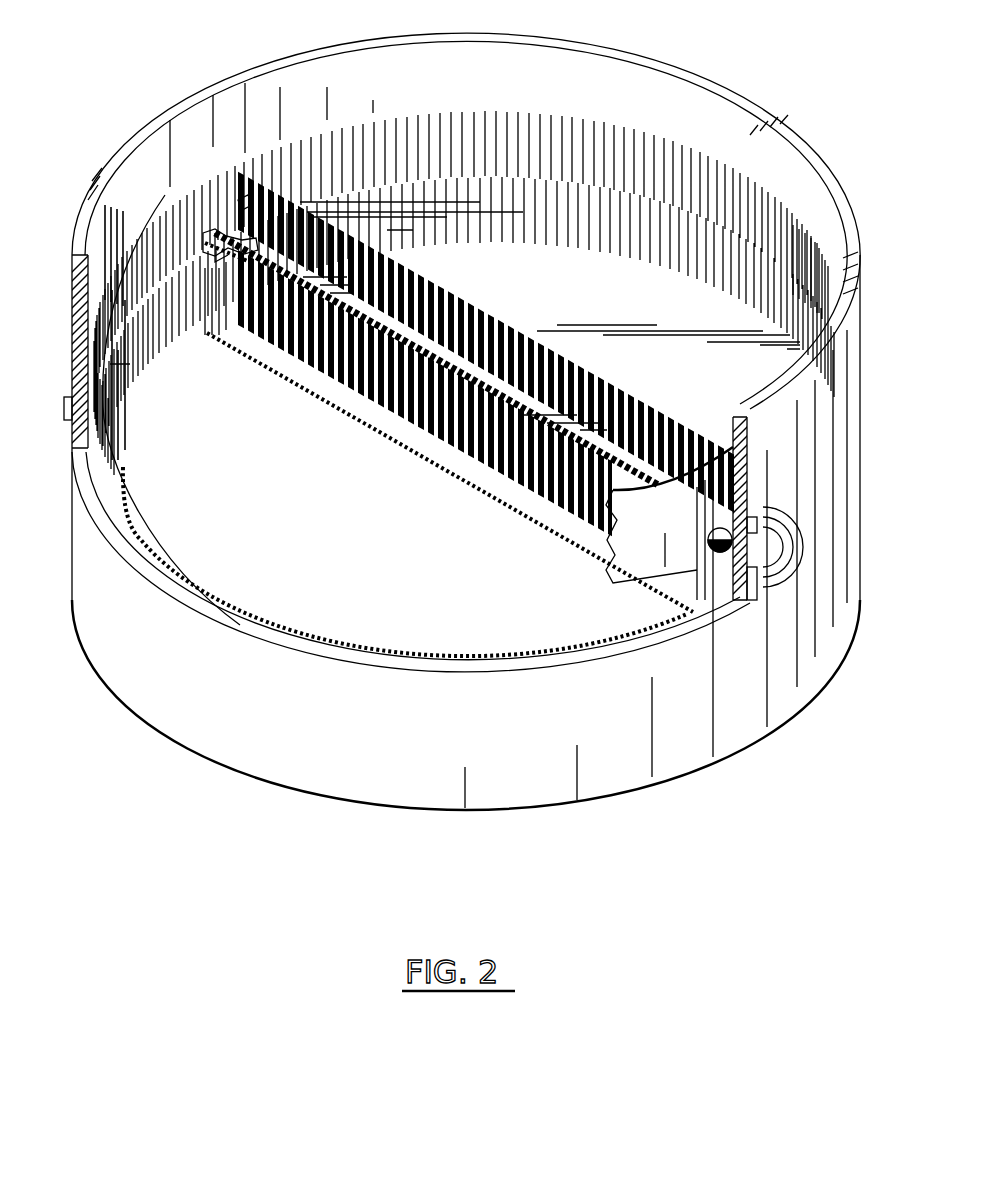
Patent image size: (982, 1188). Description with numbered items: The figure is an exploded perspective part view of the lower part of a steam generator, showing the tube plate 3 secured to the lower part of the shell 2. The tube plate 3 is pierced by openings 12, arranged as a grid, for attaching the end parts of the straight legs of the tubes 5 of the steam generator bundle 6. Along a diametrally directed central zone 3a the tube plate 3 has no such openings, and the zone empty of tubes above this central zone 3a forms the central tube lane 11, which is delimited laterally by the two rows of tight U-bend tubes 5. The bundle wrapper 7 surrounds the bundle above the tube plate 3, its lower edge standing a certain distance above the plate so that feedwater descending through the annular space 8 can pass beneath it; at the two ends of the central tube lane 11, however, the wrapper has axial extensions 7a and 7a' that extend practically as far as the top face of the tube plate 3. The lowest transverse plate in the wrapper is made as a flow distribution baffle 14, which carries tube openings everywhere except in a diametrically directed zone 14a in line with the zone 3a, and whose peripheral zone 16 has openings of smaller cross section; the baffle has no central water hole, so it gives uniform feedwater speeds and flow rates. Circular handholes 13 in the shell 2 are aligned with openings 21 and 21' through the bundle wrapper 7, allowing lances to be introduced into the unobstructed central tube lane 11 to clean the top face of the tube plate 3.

The shell 2 is at (813, 465).
The tube plate 3 is at (757, 670).
The diametral central zone 3a is at (343, 397).
The tubes 5 is at (532, 327).
The steam generator bundle 6 is at (643, 150).
The bundle wrapper 7 is at (214, 200).
The extension of the bundle wrapper 7a is at (725, 587).
The extension of the bundle wrapper 7a' is at (235, 328).
The annular space 8 is at (466, 221).
The central tube lane 11 is at (200, 280).
The openings 12 is at (385, 657).
The handholes 13 is at (778, 548).
The flow distribution baffle 14 is at (550, 316).
The diametrically directed zone 14a is at (240, 195).
The peripheral zone 16 is at (737, 287).
The opening 21 is at (704, 610).
The opening 21' is at (169, 187).